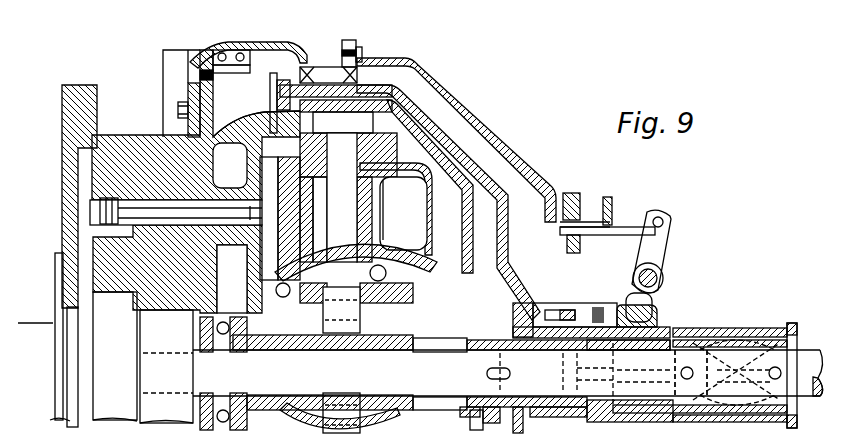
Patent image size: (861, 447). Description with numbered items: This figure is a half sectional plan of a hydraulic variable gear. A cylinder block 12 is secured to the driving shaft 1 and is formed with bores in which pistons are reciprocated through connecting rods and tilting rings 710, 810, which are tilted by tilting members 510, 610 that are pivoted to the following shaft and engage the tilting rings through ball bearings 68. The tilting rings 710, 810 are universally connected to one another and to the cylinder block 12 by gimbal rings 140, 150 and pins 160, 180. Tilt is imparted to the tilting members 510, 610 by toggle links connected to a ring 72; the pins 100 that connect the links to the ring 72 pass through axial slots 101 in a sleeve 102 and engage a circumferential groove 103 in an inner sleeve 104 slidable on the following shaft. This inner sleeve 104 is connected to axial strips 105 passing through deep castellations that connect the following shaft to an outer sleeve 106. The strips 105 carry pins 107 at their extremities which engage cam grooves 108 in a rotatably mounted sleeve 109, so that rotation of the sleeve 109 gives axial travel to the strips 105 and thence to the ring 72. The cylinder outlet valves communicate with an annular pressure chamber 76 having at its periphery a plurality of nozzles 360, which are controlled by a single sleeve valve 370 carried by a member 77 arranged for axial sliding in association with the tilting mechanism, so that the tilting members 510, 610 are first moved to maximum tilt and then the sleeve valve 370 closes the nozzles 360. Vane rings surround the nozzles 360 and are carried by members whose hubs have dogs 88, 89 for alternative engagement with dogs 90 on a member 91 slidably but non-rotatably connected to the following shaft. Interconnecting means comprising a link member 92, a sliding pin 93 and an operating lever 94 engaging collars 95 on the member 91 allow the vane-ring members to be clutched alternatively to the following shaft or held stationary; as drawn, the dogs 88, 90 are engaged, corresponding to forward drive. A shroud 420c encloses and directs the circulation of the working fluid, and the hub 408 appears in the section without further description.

The driving shaft 1 is at (105, 340).
The cylinder block 12 is at (133, 140).
The ball bearings 68 is at (368, 276).
The ring 72 is at (463, 340).
The annular pressure chamber 76 is at (230, 165).
The member 77 is at (463, 160).
The dogs 88 is at (540, 303).
The dogs 89 is at (580, 305).
The dogs 90 is at (548, 305).
The member 91 is at (603, 345).
The link member 92 is at (549, 160).
The sliding pin 93 is at (623, 228).
The operating lever 94 is at (665, 252).
The collars 95 is at (653, 318).
The pins 100 is at (478, 430).
The axial slots 101 is at (430, 413).
The sleeve 102 is at (395, 416).
The circumferential groove 103 is at (465, 418).
The inner sleeve 104 is at (510, 374).
The axial strips 105 is at (628, 422).
The outer sleeve 106 is at (675, 330).
The pins 107 is at (798, 340).
The cam grooves 108 is at (772, 328).
The rotatably mounted sleeve 109 is at (740, 327).
The gimbal ring 140 is at (386, 204).
The gimbal ring 150 is at (388, 178).
The pin 160 is at (328, 206).
The pin 180 is at (342, 145).
The nozzles 360 is at (270, 135).
The sleeve valve 370 is at (270, 108).
The hub 408 is at (343, 360).
The shroud 420c is at (205, 58).
The tilting member 510 is at (256, 305).
The tilting member 610 is at (420, 300).
The tilting ring 710 is at (292, 222).
The tilting ring 810 is at (432, 222).